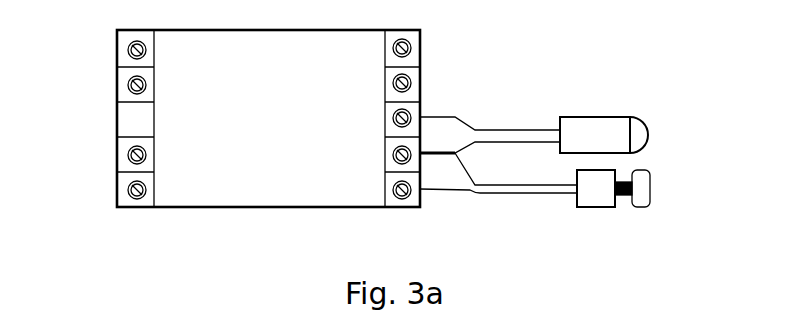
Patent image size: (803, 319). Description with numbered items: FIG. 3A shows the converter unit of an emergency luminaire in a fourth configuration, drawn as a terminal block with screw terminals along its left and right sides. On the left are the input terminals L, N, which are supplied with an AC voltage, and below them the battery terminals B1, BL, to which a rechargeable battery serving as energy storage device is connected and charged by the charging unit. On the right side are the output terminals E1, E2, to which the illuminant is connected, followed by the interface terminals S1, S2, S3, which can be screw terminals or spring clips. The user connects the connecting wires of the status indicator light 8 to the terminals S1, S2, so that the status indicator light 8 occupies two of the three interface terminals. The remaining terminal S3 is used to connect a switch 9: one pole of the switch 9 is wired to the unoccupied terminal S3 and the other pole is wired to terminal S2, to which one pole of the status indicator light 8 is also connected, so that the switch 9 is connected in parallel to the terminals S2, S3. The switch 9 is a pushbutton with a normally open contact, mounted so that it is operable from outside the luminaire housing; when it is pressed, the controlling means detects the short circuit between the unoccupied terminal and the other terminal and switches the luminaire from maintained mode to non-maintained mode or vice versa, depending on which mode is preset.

The input terminal L is at (117, 46).
The input terminal N is at (117, 85).
The terminal B1 is at (117, 154).
The bus terminal L BL is at (117, 188).
The output terminal E1 is at (420, 46).
The output terminal E2 is at (420, 78).
The terminal S1 is at (420, 110).
The terminal S2 is at (428, 156).
The terminal S3 is at (420, 200).
The status indicator light 8 is at (649, 133).
The switch 9 is at (650, 188).